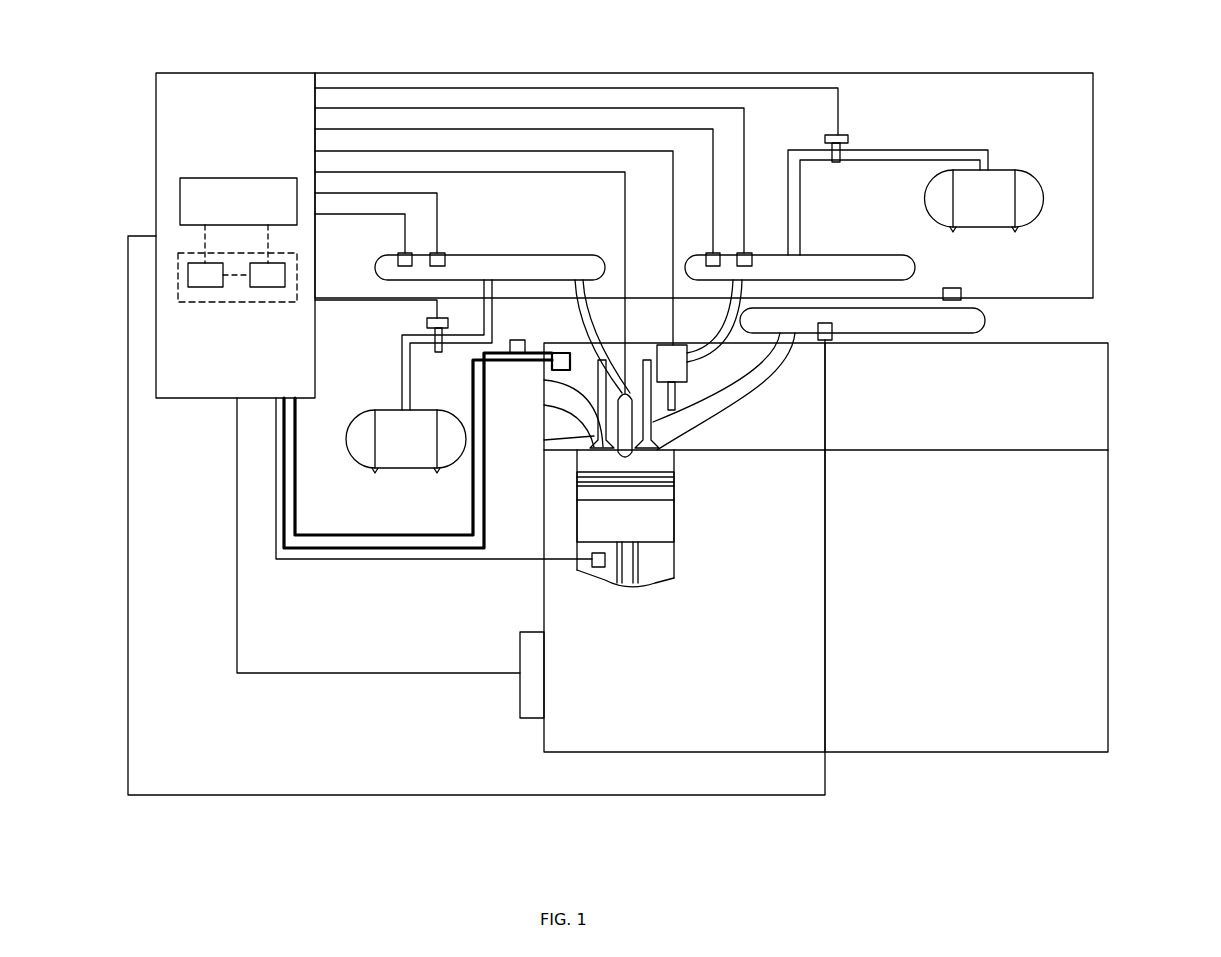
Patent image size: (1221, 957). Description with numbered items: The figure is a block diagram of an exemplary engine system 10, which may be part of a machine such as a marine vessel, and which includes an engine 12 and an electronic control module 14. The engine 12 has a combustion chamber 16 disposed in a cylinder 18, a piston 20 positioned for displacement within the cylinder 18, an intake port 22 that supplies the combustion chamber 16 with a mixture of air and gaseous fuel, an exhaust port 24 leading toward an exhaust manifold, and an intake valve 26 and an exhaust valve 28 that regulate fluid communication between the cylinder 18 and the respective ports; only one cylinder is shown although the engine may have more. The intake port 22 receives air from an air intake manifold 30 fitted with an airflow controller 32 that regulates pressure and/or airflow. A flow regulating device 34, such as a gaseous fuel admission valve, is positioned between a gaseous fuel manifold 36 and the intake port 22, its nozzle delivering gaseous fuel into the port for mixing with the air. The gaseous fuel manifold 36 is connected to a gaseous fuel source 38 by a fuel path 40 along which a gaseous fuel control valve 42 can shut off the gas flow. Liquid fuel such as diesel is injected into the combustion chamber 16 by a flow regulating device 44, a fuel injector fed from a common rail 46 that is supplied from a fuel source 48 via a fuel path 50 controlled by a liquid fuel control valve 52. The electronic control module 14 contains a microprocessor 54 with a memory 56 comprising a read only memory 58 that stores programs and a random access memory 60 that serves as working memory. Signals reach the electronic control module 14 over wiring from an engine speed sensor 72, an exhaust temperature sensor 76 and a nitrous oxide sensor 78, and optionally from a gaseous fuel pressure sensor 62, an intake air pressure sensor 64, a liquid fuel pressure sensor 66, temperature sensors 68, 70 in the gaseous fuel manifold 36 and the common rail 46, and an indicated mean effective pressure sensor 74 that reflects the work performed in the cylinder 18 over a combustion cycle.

The engine system 10 is at (762, 44).
The engine 12 is at (1108, 580).
The electronic control module 14 is at (246, 72).
The combustion chamber 16 is at (675, 458).
The cylinder 18 is at (674, 553).
The piston 20 is at (675, 490).
The intake port 22 is at (737, 390).
The exhaust port 24 is at (565, 402).
The intake valve 26 is at (672, 423).
The exhaust valve 28 is at (568, 438).
The air intake manifold 30 is at (985, 320).
The airflow controller 32 is at (953, 288).
The flow regulating device 34 is at (680, 348).
The gaseous fuel manifold 36 is at (853, 257).
The gaseous fuel source 38 is at (1000, 170).
The fuel path 40 is at (918, 150).
The gaseous fuel control valve 42 is at (845, 138).
The flow regulating device 44 is at (630, 380).
The common rail 46 is at (540, 257).
The fuel source 48 is at (362, 460).
The fuel path 50 is at (410, 378).
The liquid fuel control valve 52 is at (445, 318).
The microprocessor 54 is at (238, 201).
The memory 56 is at (178, 279).
The read only memory 58 is at (205, 275).
The random access memory 60 is at (267, 275).
The gaseous fuel pressure sensor 62 is at (708, 253).
The intake air pressure sensor 64 is at (832, 340).
The liquid fuel pressure sensor 66 is at (399, 255).
The temperature sensor 68 is at (750, 253).
The temperature sensor 70 is at (445, 256).
The engine speed sensor 72 is at (520, 635).
The indicated mean effective pressure sensor 74 is at (598, 567).
The exhaust temperature sensor 76 is at (560, 353).
The nitrous oxide sensor 78 is at (517, 340).